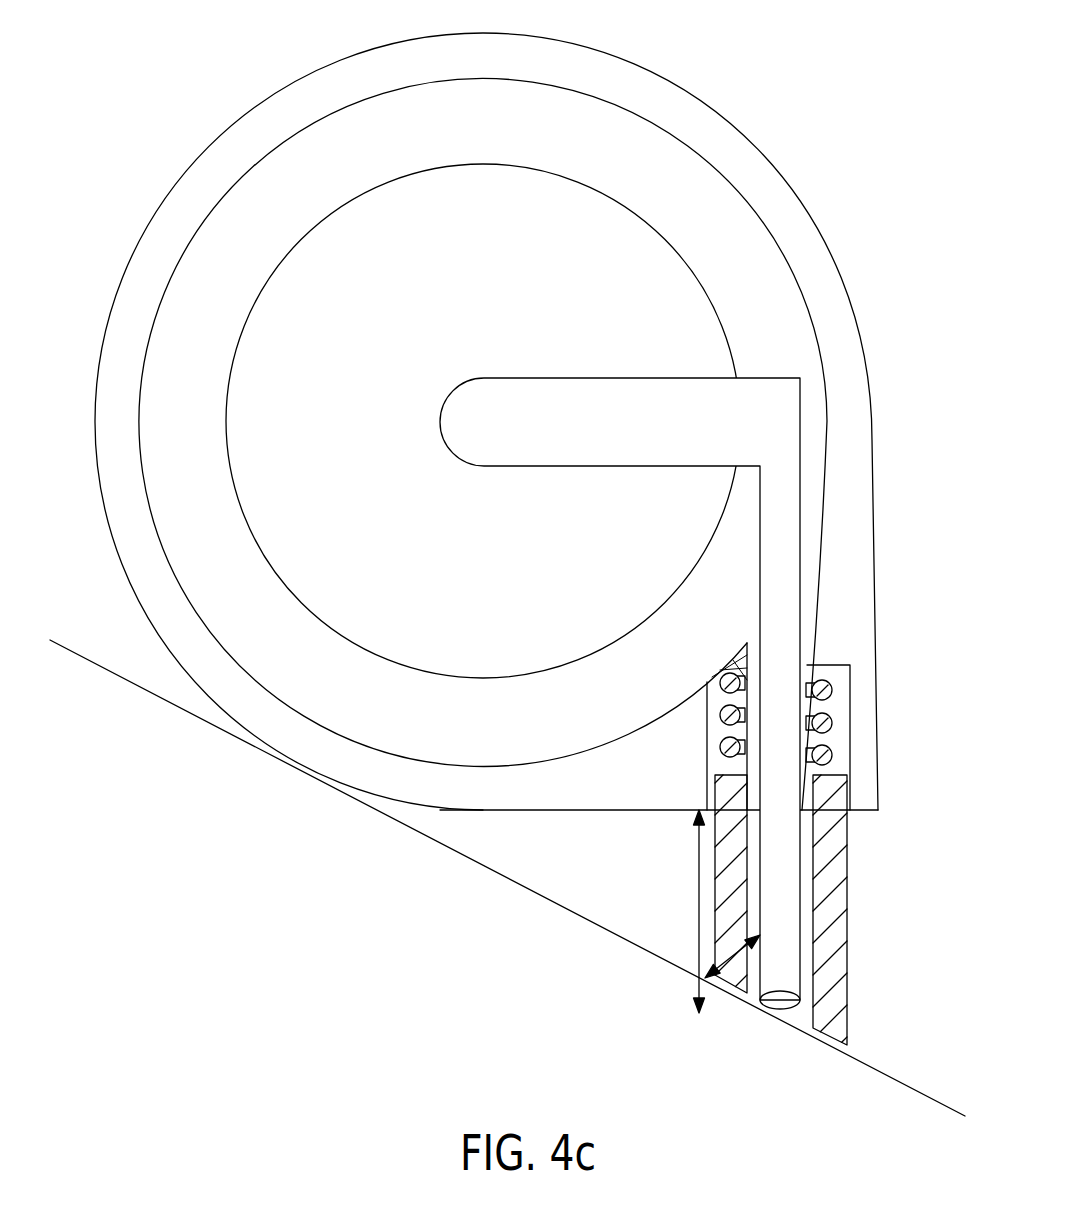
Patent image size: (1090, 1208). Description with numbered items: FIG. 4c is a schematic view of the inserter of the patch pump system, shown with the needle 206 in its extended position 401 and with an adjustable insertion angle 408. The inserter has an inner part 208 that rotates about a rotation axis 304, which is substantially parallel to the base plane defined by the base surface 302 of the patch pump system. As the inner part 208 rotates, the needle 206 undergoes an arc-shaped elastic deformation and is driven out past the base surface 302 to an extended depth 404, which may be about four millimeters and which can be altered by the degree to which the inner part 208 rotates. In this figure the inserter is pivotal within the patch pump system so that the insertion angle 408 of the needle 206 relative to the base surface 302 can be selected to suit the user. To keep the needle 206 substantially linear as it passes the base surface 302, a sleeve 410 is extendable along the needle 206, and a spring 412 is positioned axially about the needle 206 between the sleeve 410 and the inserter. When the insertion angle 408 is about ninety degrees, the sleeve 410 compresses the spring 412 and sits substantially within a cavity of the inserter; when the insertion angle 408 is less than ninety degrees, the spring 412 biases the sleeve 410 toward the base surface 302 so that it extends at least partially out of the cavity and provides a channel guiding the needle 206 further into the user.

The extended position 401 is at (822, 79).
The needle 206 is at (780, 677).
The inner part 208 is at (388, 630).
The base surface 302 is at (614, 828).
The rotation axis 304 is at (468, 412).
The extended depth 404 is at (698, 887).
The insertion angle 408 is at (742, 995).
The sleeve 410 is at (835, 905).
The spring 412 is at (833, 723).